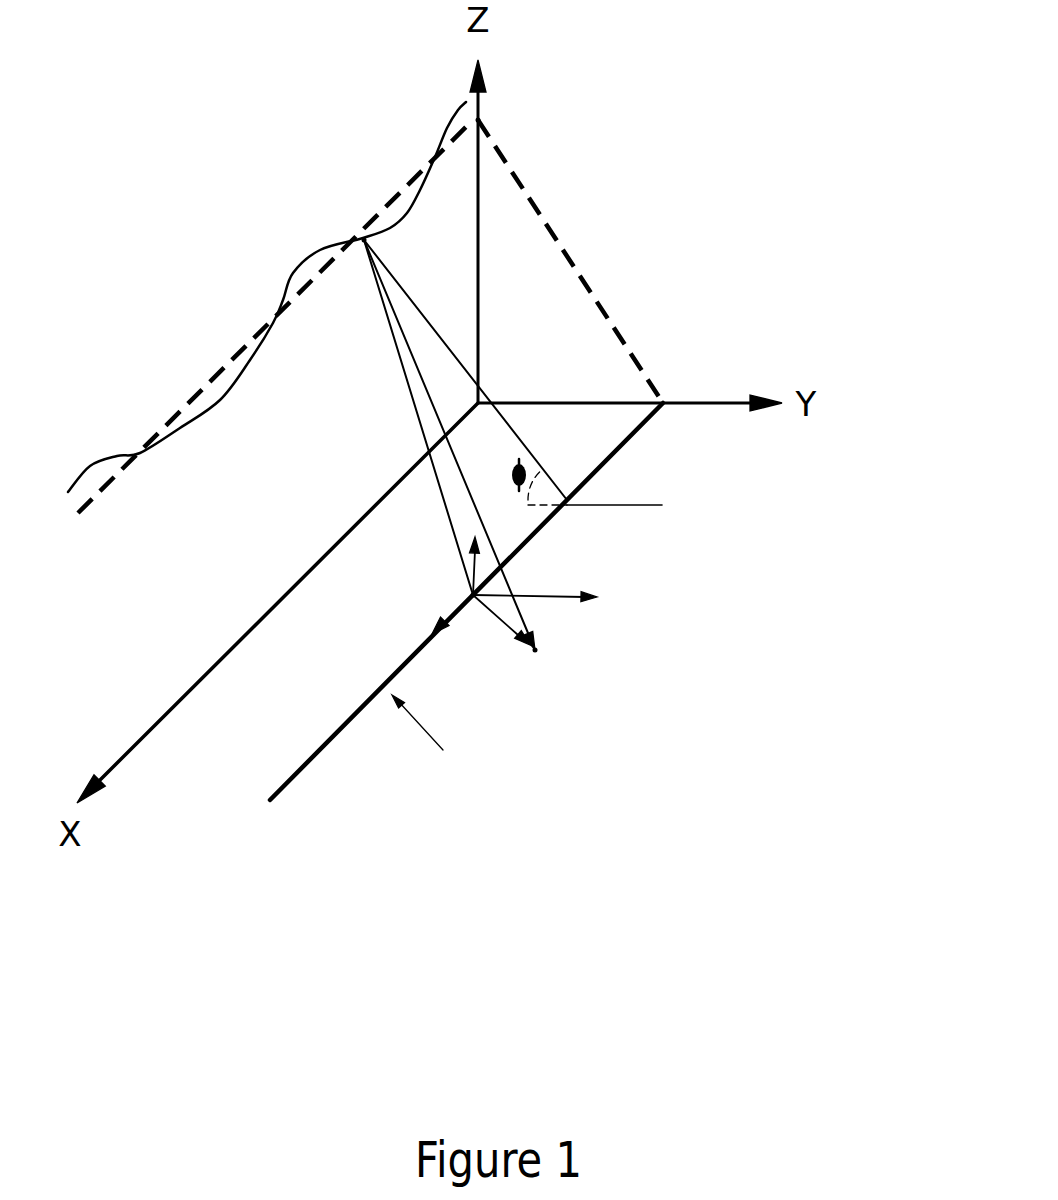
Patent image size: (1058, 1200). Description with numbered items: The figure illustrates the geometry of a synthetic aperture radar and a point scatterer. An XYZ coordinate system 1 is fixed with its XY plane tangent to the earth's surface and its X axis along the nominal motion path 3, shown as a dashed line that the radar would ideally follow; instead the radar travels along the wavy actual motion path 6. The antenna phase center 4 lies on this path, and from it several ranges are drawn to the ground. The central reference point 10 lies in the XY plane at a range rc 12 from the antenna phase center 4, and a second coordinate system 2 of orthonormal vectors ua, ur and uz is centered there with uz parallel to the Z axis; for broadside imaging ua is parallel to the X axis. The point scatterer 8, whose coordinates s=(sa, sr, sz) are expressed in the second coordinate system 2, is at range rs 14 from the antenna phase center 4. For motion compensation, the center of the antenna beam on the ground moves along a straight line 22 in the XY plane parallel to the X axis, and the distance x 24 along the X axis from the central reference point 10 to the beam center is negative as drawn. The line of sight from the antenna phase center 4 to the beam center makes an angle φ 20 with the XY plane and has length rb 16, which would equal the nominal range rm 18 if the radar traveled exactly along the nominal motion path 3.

The XYZ coordinate system 1 is at (513, 133).
The second coordinate system 2 is at (500, 636).
The nominal motion path 3 is at (384, 174).
The antenna phase center 4 is at (351, 226).
The actual motion path 6 is at (275, 285).
The point scatterer 8 is at (638, 674).
The central reference point 10 is at (523, 565).
The range rc 12 is at (403, 417).
The range rs 14 is at (449, 445).
The line-of-sight length rb 16 is at (465, 366).
The nominal range rm 18 is at (570, 261).
The angle φ 20 is at (558, 468).
The straight line of beam center motion 22 is at (293, 787).
The distance x 24 is at (628, 516).